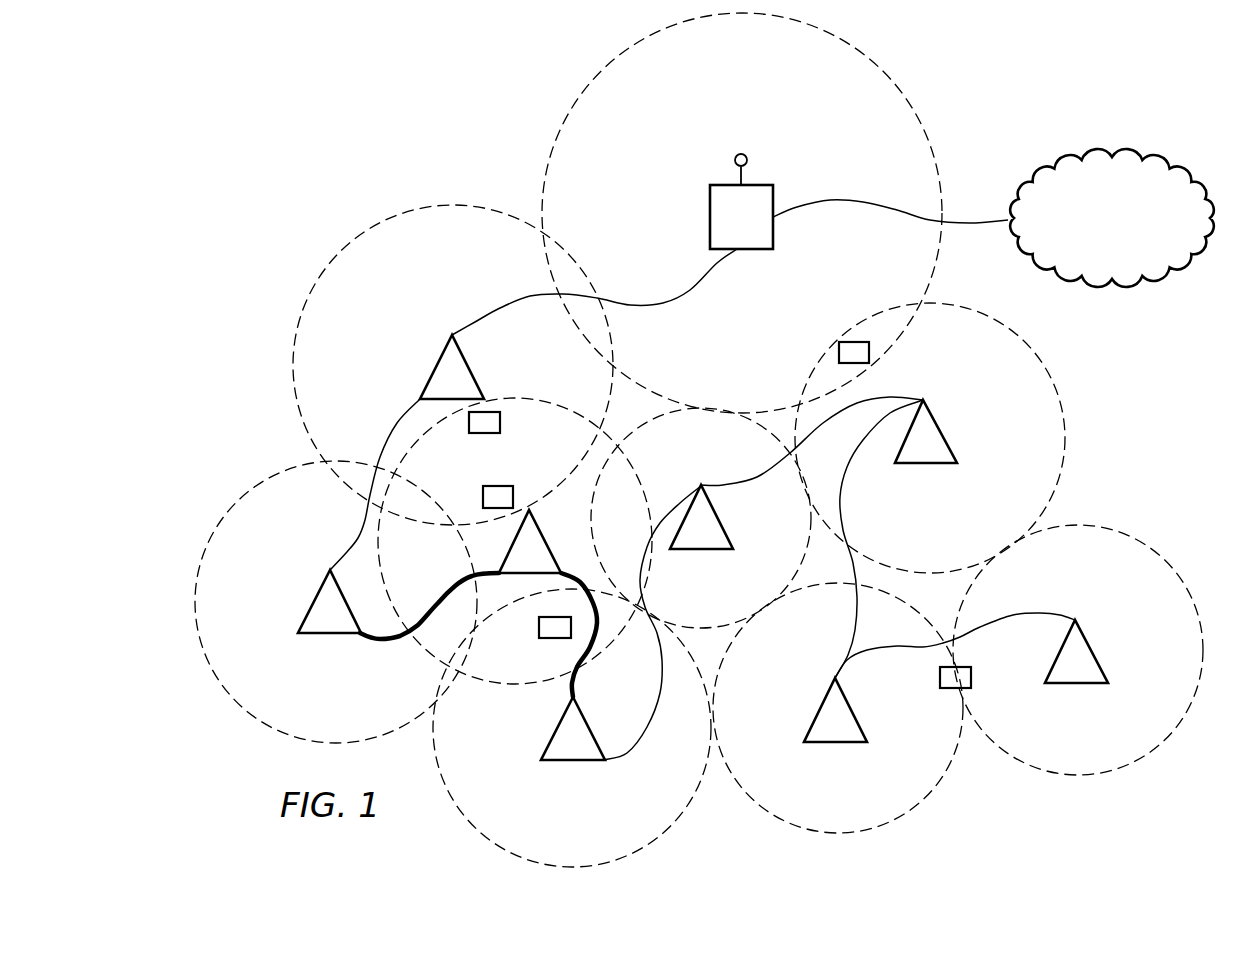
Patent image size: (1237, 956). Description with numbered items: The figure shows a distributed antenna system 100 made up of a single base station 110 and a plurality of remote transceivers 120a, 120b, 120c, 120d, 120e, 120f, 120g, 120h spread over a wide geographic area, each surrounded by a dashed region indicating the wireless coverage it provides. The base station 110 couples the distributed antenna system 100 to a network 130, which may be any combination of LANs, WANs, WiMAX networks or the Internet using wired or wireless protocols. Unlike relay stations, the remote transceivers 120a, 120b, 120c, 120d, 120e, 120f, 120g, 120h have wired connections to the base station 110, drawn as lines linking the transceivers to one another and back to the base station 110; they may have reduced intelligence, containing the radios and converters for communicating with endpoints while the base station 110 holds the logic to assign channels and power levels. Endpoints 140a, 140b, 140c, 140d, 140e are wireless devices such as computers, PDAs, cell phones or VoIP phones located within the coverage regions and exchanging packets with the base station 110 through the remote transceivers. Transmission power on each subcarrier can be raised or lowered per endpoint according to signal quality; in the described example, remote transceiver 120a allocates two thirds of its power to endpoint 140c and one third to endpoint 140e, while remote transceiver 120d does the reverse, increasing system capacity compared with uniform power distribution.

The distributed antenna system 100 is at (421, 128).
The base station 110 is at (710, 215).
The remote transceiver 120a is at (437, 367).
The remote transceiver 120b is at (313, 603).
The remote transceiver 120c is at (572, 761).
The remote transceiver 120d is at (509, 552).
The remote transceiver 120e is at (720, 522).
The remote transceiver 120f is at (941, 435).
The remote transceiver 120g is at (835, 743).
The remote transceiver 120h is at (1093, 657).
The network 130 is at (1111, 289).
The endpoint 140a is at (539, 627).
The endpoint 140b is at (940, 678).
The endpoint 140c is at (500, 421).
The endpoint 140d is at (856, 343).
The endpoint 140e is at (483, 495).